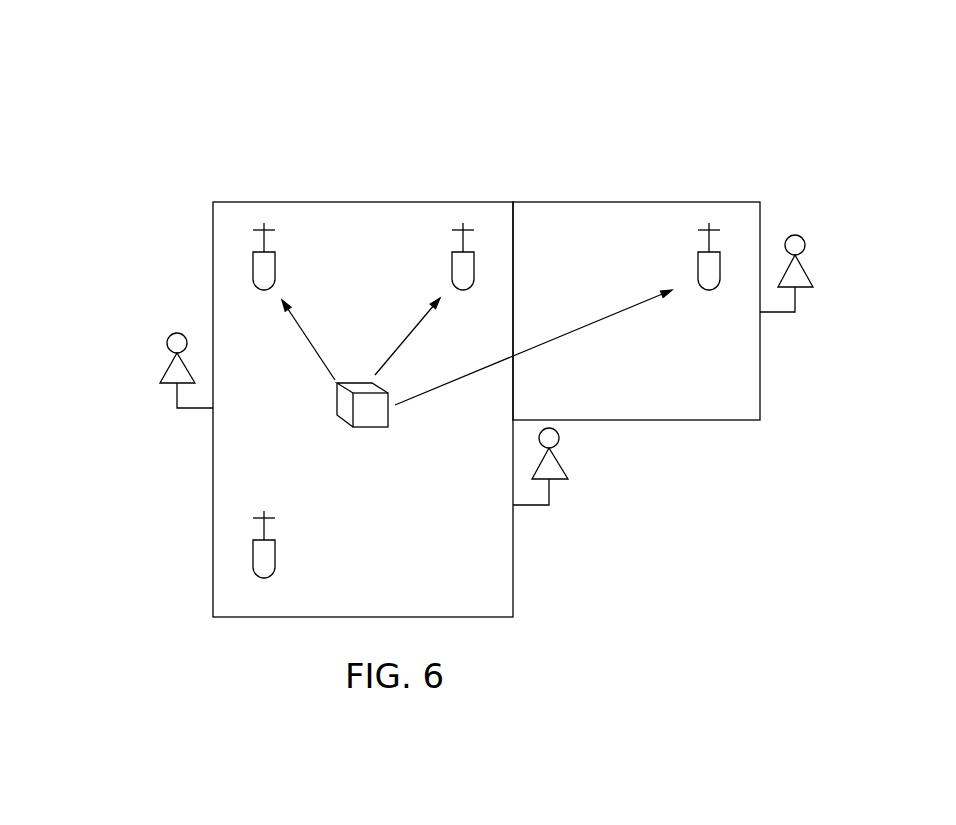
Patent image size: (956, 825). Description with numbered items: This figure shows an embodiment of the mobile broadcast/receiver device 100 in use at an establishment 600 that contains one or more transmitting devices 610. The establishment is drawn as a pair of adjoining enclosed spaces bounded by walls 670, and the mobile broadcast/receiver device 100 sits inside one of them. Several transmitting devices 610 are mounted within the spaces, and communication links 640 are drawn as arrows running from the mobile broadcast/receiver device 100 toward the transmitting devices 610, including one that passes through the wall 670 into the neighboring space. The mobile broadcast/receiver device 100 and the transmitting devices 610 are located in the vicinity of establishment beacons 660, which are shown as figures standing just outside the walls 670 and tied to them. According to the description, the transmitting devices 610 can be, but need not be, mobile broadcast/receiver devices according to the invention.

The environment with multiple rooms 600 is at (200, 88).
The transmitting device 610 is at (264, 222).
The wireless signal / communication link 640 is at (538, 343).
The establishment beacon 660 is at (157, 370).
The room / wall 670 is at (517, 578).
The mobile broadcast/receiver device 100 is at (368, 428).